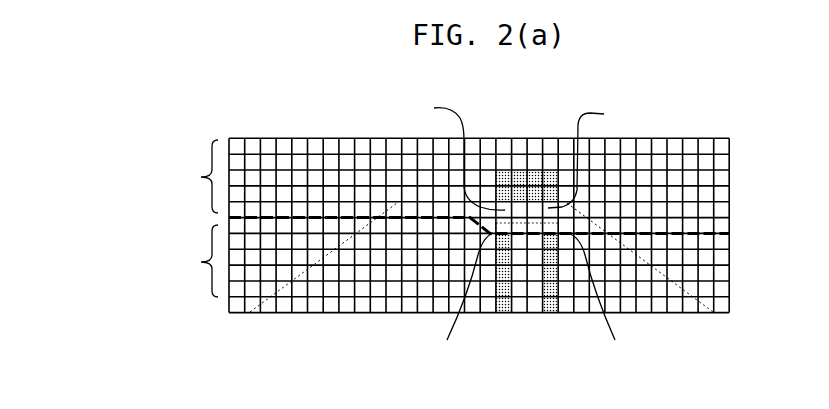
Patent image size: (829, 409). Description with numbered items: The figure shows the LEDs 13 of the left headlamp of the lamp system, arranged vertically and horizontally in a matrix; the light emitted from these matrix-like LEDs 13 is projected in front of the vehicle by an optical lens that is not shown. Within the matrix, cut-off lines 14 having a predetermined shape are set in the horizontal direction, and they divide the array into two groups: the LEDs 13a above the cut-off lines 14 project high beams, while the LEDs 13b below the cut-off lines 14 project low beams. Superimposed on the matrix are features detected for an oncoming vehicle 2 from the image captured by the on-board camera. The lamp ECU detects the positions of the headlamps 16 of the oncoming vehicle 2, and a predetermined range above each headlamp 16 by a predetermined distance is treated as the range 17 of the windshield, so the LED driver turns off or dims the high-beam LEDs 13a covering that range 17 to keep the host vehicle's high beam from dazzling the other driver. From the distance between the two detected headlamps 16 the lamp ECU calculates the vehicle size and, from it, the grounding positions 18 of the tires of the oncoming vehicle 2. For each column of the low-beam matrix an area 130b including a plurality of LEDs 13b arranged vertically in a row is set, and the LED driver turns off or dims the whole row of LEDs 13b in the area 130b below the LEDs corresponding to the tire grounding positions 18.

The LEDs 13 is at (657, 103).
The LEDs above the cut-off lines 13a is at (125, 176).
The LEDs below the cut-off lines 13b is at (130, 261).
The cut-off lines 14 is at (718, 233).
The oncoming vehicle 2 is at (533, 213).
The headlamps of the oncoming vehicle 16 is at (517, 155).
The range of a windshield 17 is at (517, 177).
The grounding positions of tires 18 is at (539, 303).
The area 130b is at (500, 314).